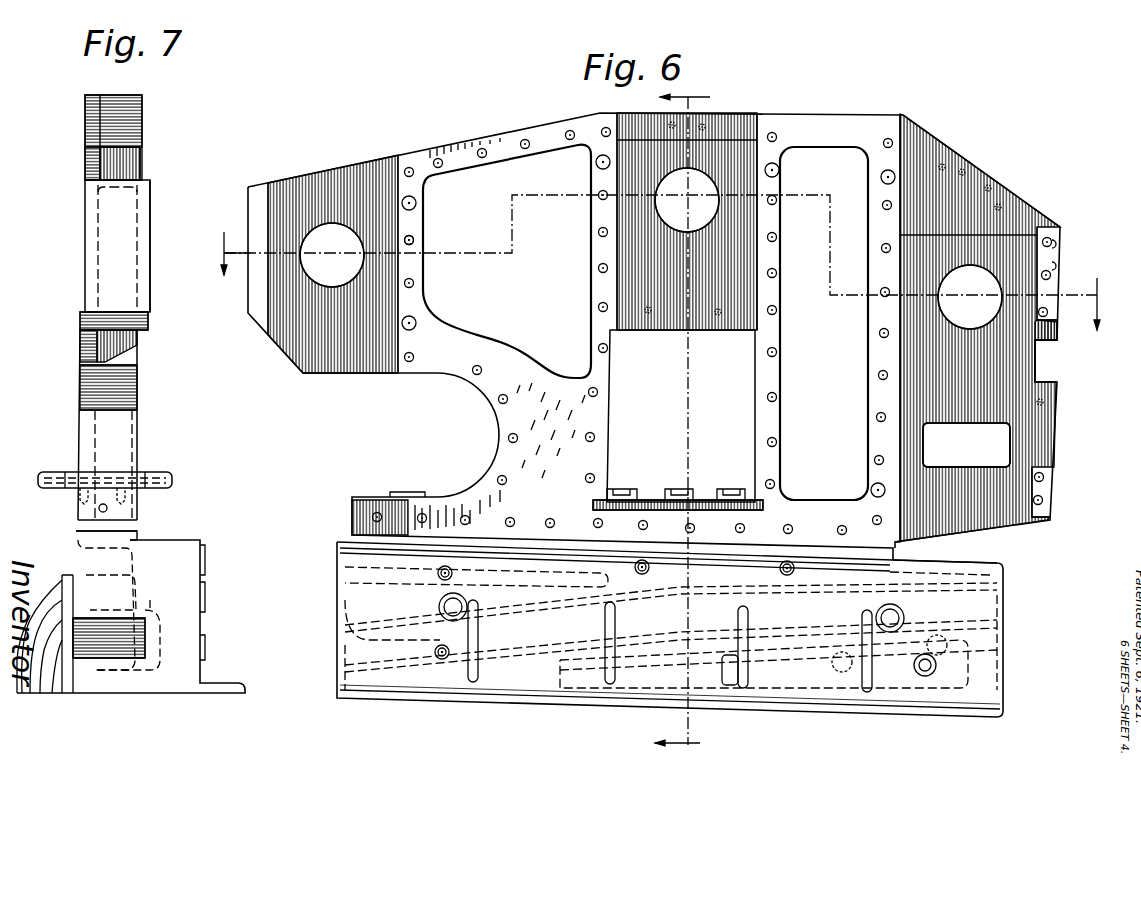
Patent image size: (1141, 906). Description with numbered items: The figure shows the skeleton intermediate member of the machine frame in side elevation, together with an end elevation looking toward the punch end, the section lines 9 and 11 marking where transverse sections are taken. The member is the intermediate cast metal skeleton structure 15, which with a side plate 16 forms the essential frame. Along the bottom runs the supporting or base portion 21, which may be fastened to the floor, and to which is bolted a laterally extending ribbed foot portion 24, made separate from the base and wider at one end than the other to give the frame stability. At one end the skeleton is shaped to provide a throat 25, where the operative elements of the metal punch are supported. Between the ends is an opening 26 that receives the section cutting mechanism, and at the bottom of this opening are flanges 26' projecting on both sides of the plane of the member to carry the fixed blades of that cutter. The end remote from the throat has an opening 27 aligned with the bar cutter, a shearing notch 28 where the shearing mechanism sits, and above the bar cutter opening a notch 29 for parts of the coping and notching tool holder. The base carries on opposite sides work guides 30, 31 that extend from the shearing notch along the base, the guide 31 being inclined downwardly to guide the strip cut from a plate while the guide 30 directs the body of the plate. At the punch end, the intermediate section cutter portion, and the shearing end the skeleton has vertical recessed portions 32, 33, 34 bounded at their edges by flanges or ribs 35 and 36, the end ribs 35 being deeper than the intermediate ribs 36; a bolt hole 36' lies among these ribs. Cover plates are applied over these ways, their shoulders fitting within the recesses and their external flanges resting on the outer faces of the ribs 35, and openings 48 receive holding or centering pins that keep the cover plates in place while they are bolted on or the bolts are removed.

In FIG. 6, the section line 9- 9 is at (662, 423).
In FIG. 6, the section line 11- 11 is at (675, 262).
In FIG. 7, the section line 11- 11 is at (216, 255).
In FIG. 6, the intermediate cast metal skeleton structure 15 is at (507, 308).
In FIG. 6, the side plate 16 is at (1048, 215).
In FIG. 6, the base portion 21 is at (518, 680).
In FIG. 7, the base portion 21 is at (188, 595).
In FIG. 7, the ribbed foot portion 24 is at (40, 700).
In FIG. 6, the throat 25 is at (575, 336).
In FIG. 7, the throat 25 is at (113, 355).
In FIG. 6, the opening 26 is at (681, 416).
In FIG. 6, the flanges 26' is at (678, 481).
In FIG. 7, the flanges 26' is at (115, 474).
In FIG. 6, the bar cutter opening 27 is at (988, 451).
In FIG. 6, the shearing notch 28 is at (963, 557).
In FIG. 6, the notch 29 is at (1040, 368).
In FIG. 6, the work guide 30 is at (340, 545).
In FIG. 7, the work guide 30 is at (140, 535).
In FIG. 6, the work guide 31 is at (575, 628).
In FIG. 6, the recessed portion 32 is at (360, 370).
In FIG. 7, the recessed portion 32 is at (145, 172).
In FIG. 6, the recessed portion 33 is at (742, 150).
In FIG. 6, the recessed portion 34 is at (1003, 245).
In FIG. 6, the end flange 35 is at (262, 290).
In FIG. 7, the end flange 35 is at (147, 218).
In FIG. 6, the intermediate flange 36 is at (712, 331).
In FIG. 6, the bolt hole 36' is at (437, 242).
In FIG. 6, the opening 48 is at (414, 203).